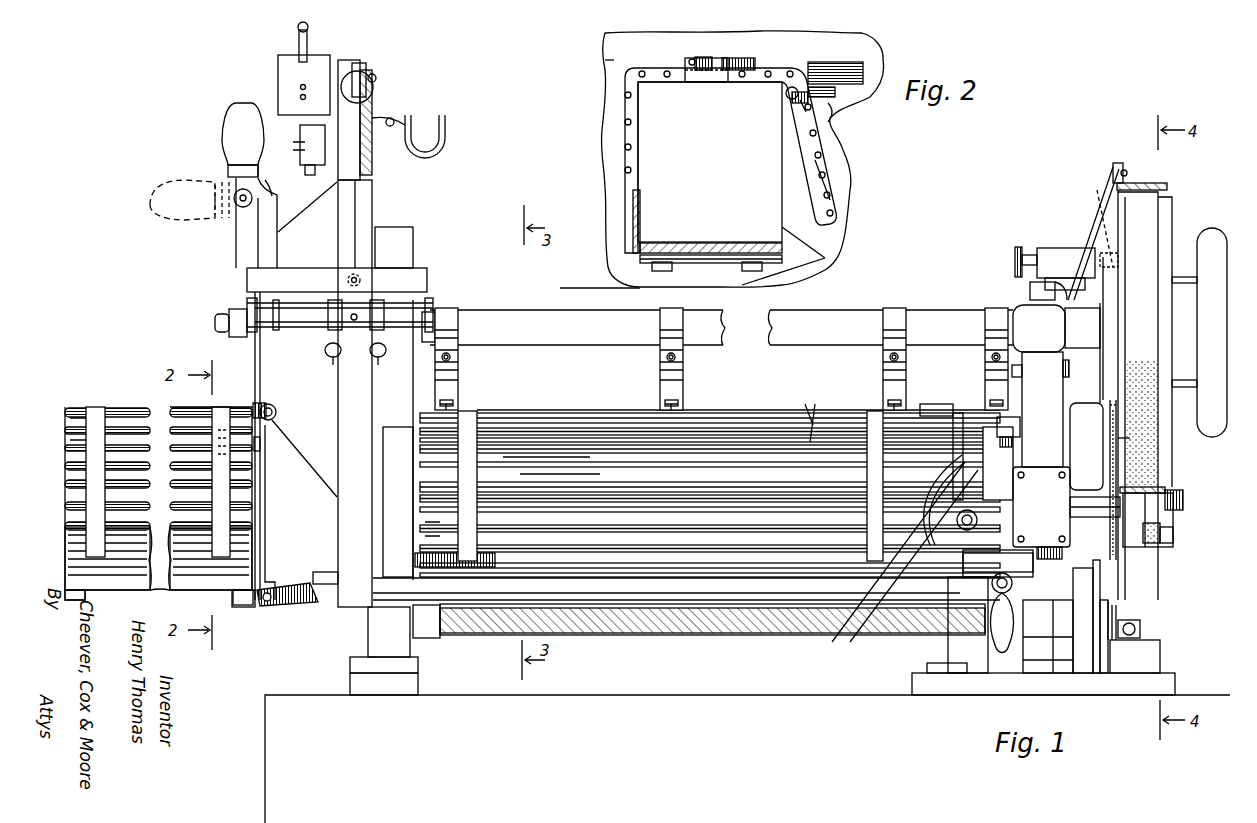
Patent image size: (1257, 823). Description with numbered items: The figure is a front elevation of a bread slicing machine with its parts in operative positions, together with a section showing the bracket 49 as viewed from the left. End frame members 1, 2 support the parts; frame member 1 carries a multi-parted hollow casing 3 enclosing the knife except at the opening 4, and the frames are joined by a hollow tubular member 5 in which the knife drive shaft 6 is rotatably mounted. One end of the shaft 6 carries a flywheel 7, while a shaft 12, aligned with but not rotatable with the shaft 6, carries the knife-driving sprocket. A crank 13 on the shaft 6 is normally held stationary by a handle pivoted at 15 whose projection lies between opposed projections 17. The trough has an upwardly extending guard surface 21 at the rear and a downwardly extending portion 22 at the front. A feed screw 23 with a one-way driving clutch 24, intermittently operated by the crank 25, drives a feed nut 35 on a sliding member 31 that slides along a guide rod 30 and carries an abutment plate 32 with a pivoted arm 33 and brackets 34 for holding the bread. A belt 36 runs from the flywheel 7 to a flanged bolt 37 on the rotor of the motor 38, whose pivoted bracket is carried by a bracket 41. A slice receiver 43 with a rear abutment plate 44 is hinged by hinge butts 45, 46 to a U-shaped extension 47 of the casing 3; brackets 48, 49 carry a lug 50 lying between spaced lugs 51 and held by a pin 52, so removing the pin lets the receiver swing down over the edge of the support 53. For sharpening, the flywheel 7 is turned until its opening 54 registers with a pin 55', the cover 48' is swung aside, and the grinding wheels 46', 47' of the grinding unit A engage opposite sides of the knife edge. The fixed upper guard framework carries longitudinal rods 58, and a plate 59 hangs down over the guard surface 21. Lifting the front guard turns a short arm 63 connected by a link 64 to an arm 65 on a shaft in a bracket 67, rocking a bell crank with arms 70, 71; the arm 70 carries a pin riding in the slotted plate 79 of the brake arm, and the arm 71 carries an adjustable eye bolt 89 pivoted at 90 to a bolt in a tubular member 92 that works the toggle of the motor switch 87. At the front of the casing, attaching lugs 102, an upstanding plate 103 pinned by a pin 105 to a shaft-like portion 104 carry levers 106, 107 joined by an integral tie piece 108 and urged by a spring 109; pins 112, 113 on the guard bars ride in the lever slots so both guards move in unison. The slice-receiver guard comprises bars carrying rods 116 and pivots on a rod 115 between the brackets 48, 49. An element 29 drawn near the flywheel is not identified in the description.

In FIG. 1, the end frame member 1 is at (380, 640).
In FIG. 1, the end frame member 2 is at (1043, 650).
In FIG. 1, the hollow casing 3 is at (346, 212).
In FIG. 2, the hollow casing 3 is at (606, 60).
In FIG. 2, the opening 4 is at (660, 176).
In FIG. 1, the hollow tubular member 5 is at (580, 312).
In FIG. 1, the drive shaft 6 is at (757, 318).
In FIG. 1, the flywheel 7 is at (1178, 200).
In FIG. 1, the shaft 12 is at (215, 323).
In FIG. 1, the crank 13 is at (250, 254).
In FIG. 1, the pivot 15 is at (240, 206).
In FIG. 1, the opposed projections 17 is at (268, 196).
In FIG. 1, the guard surface 21 is at (420, 555).
In FIG. 1, the downwardly extending portion 22 is at (530, 572).
In FIG. 1, the feed screw 23 is at (686, 625).
In FIG. 1, the one-way driving clutch 24 is at (1083, 655).
In FIG. 1, the crank 25 is at (1102, 578).
In FIG. 1, the handle 29 is at (1117, 275).
In FIG. 1, the guide rod 30 is at (740, 590).
In FIG. 1, the sliding member 31 is at (960, 572).
In FIG. 1, the abutment plate 32 is at (960, 528).
In FIG. 1, the pivoted arm 33 is at (930, 548).
In FIG. 1, the brackets 34 is at (886, 559).
In FIG. 1, the feed nut 35 is at (988, 635).
In FIG. 1, the belt 36 is at (1150, 470).
In FIG. 1, the flanged bolt 37 is at (1162, 538).
In FIG. 1, the motor 38 is at (965, 410).
In FIG. 1, the bracket 41 is at (927, 666).
In FIG. 1, the slice receiver 43 is at (180, 590).
In FIG. 1, the rear abutment plate 44 is at (68, 553).
In FIG. 2, the rear abutment plate 44 is at (640, 200).
In FIG. 1, the hinge butt 45 is at (244, 606).
In FIG. 2, the hinge butt 45 is at (750, 271).
In FIG. 1, the hinge butt 46 is at (287, 611).
In FIG. 1, the U-shaped extension 47 is at (325, 603).
In FIG. 2, the U-shaped extension 47 is at (795, 256).
In FIG. 1, the bracket 48 is at (86, 601).
In FIG. 1, the bracket 49 is at (236, 596).
In FIG. 2, the bracket 49 is at (632, 155).
In FIG. 1, the lug 50 is at (240, 405).
In FIG. 2, the lug 50 is at (708, 60).
In FIG. 1, the spaced lugs 51 is at (262, 400).
In FIG. 1, the pin 52 is at (272, 420).
In FIG. 2, the pin 52 is at (688, 80).
In FIG. 1, the support 53 is at (350, 678).
In FIG. 1, the opening 54 is at (1098, 215).
In FIG. 1, the rods 58 is at (935, 420).
In FIG. 1, the plate 59 is at (745, 442).
In FIG. 1, the short arm 63 is at (1013, 417).
In FIG. 1, the link 64 is at (1010, 427).
In FIG. 1, the arm 65 is at (1023, 450).
In FIG. 1, the bracket 67 is at (1052, 470).
In FIG. 1, the arm 70 is at (1130, 438).
In FIG. 1, the arm 71 is at (1112, 612).
In FIG. 1, the plate 79 is at (1118, 462).
In FIG. 1, the switch 87 is at (1156, 660).
In FIG. 1, the adjustable eye bolt 89 is at (1118, 615).
In FIG. 1, the pivotal connection 90 is at (1104, 660).
In FIG. 1, the tubular member 92 is at (1140, 628).
In FIG. 1, the attaching lugs 102 is at (333, 365).
In FIG. 1, the upstanding plate 103 is at (378, 262).
In FIG. 1, the shaft-like portion 104 is at (405, 310).
In FIG. 1, the pin 105 is at (350, 320).
In FIG. 1, the lever 106 is at (254, 354).
In FIG. 2, the lever 106 is at (800, 74).
In FIG. 1, the lever 107 is at (410, 388).
In FIG. 1, the tie piece 108 is at (268, 278).
In FIG. 1, the spring 109 is at (362, 280).
In FIG. 1, the pin 112 is at (260, 448).
In FIG. 2, the pin 112 is at (806, 112).
In FIG. 1, the pin 113 is at (410, 445).
In FIG. 2, the rod 115 is at (790, 98).
In FIG. 1, the rods 116 is at (70, 440).
In FIG. 1, the grinding unit A is at (278, 66).
In FIG. 1, the grinding wheel 46' is at (358, 106).
In FIG. 1, the grinding wheel 47' is at (382, 75).
In FIG. 1, the cover 48' is at (430, 136).
In FIG. 1, the pin 55' is at (1066, 278).